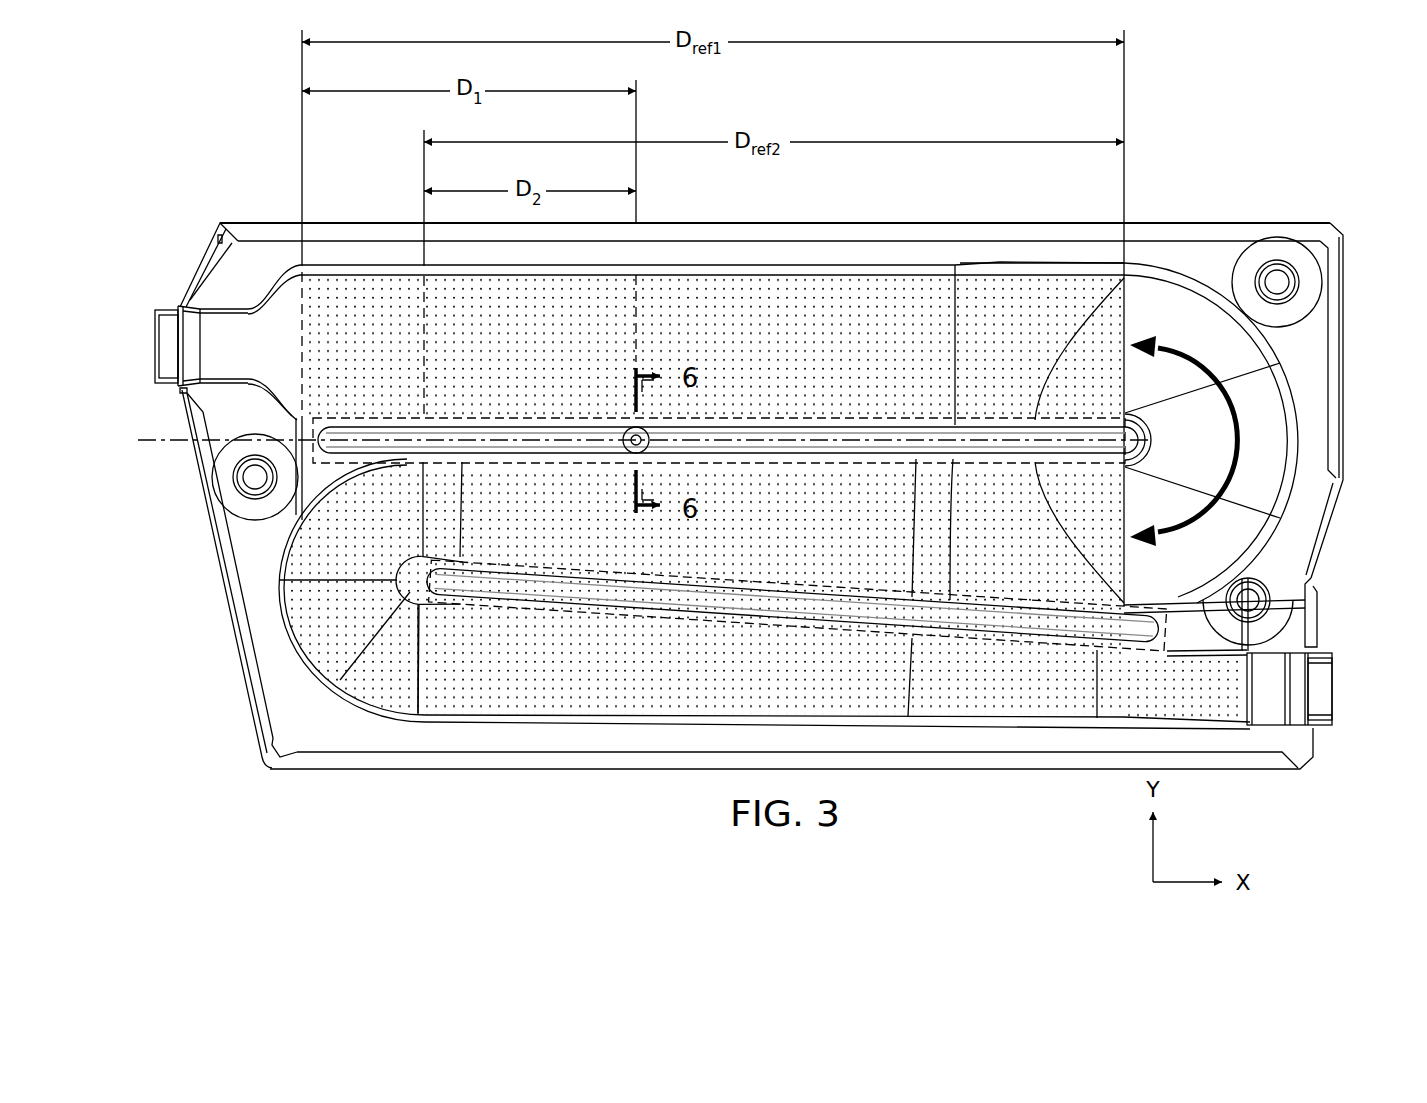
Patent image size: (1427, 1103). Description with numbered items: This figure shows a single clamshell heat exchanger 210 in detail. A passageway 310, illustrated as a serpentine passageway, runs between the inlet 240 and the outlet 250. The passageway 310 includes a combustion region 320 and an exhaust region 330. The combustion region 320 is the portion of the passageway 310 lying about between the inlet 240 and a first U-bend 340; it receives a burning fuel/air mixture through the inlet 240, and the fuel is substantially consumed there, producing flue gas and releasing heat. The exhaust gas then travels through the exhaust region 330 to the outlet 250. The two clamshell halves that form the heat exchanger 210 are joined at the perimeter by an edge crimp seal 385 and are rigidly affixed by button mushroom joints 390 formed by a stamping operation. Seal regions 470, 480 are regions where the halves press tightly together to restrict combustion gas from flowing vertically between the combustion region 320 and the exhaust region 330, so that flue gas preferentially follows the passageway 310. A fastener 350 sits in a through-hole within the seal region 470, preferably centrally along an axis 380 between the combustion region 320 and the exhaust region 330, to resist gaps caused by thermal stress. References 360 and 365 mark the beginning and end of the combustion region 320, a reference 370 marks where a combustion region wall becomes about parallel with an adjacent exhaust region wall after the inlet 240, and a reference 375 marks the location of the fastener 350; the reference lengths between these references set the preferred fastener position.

The heat exchanger 210 is at (203, 88).
The inlet 240 is at (153, 347).
The outlet 250 is at (1335, 689).
The passageway 310 is at (1005, 258).
The combustion region 320 is at (859, 357).
The exhaust region 330 is at (857, 537).
The first U-bend 340 is at (1186, 351).
The fastener 350 is at (627, 429).
The reference 360 is at (302, 63).
The reference 365 is at (1126, 77).
The reference 370 is at (424, 173).
The reference 375 is at (638, 117).
The axis 380 is at (144, 442).
The edge crimp seal 385 is at (266, 231).
The mushroom joints 390 is at (1278, 247).
The seal region 470 is at (411, 419).
The seal region 480 is at (577, 573).